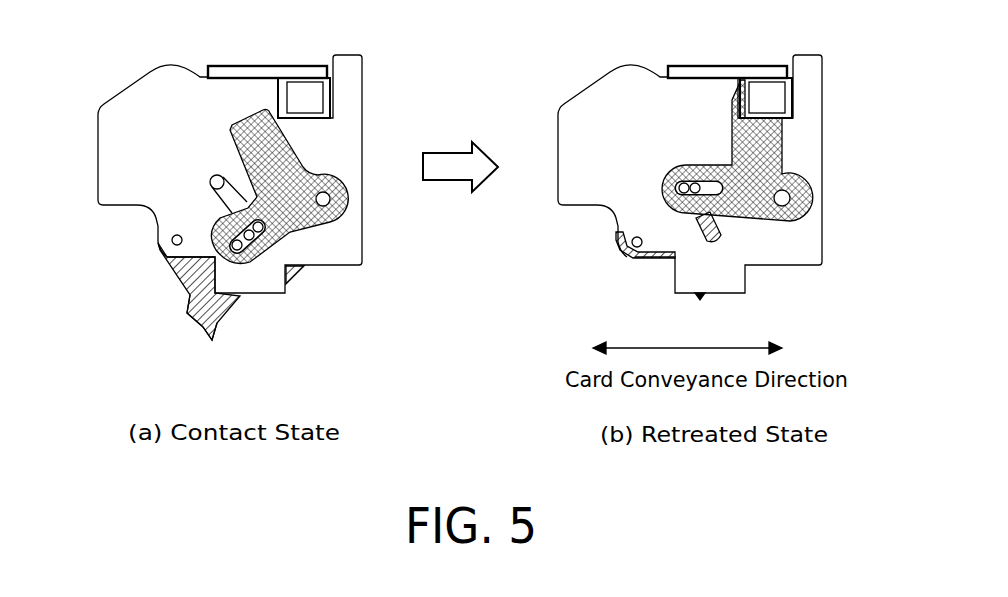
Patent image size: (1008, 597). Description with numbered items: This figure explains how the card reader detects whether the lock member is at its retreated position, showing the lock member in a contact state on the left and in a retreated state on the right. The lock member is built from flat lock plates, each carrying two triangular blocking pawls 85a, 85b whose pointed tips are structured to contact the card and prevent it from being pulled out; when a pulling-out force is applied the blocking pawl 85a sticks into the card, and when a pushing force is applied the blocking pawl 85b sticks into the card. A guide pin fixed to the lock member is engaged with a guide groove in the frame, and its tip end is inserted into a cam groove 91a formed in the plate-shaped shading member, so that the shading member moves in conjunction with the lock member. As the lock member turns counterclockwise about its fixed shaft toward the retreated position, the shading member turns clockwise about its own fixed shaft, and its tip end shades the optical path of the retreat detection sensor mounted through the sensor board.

The blocking pawl 85a is at (211, 345).
The blocking pawl 85b is at (193, 328).
The cam groove 91a is at (234, 212).